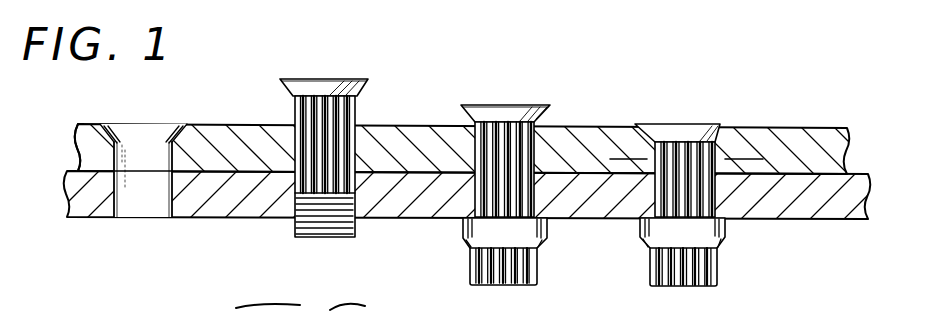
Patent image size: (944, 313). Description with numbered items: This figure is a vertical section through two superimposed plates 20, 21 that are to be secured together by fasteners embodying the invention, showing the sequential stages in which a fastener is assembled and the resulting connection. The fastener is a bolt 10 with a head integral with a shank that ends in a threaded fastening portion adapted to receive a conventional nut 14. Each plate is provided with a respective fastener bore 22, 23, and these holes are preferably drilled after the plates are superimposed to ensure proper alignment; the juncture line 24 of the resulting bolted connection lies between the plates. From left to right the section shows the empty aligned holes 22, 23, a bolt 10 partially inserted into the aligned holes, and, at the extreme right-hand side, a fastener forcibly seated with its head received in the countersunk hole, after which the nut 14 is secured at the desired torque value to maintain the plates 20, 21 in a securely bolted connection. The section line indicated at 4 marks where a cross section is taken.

The section line 4- 4 is at (755, 150).
The bolt 10 is at (351, 118).
The nut 14 is at (538, 263).
The plate 20 is at (251, 137).
The plate 21 is at (241, 207).
The fastener bore 22 is at (152, 141).
The fastener bore 23 is at (170, 216).
The juncture line 24 is at (77, 160).